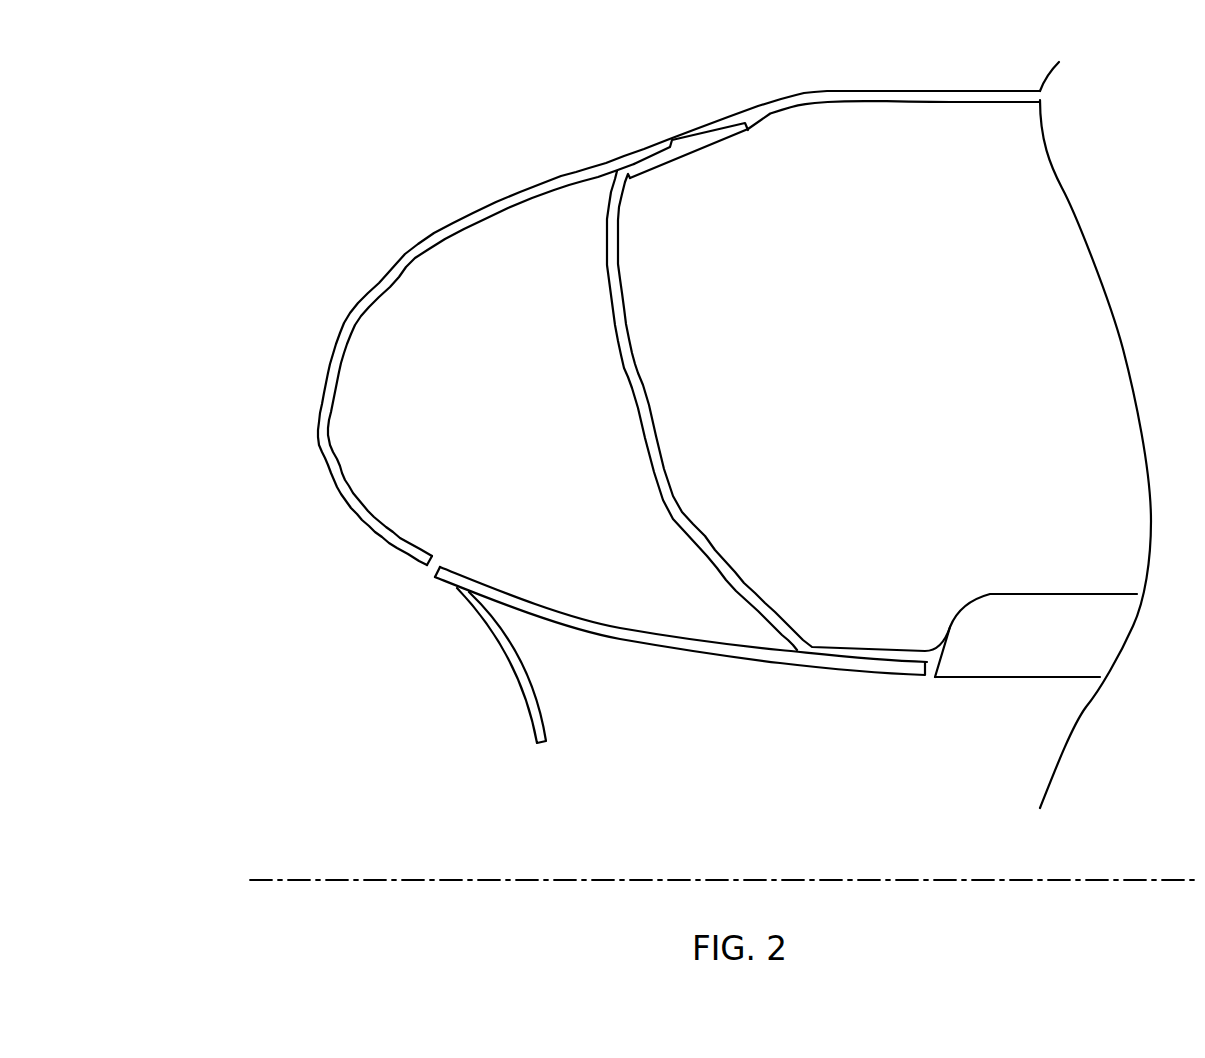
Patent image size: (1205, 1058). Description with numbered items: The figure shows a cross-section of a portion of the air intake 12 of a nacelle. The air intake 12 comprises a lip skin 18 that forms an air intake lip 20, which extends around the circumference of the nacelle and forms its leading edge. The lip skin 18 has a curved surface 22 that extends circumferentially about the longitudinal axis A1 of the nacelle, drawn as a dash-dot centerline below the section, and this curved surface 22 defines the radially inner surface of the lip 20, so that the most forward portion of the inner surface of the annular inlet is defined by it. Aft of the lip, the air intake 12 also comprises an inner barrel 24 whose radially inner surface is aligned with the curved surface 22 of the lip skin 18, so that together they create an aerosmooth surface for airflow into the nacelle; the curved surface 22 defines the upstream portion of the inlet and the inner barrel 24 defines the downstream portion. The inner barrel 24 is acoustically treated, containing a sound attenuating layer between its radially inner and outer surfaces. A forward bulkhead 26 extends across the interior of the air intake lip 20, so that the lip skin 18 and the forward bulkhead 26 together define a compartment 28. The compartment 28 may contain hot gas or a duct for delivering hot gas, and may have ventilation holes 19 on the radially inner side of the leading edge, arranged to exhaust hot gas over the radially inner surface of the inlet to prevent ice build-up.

The air intake 12 is at (253, 132).
The air intake lip 20 is at (285, 445).
The compartment 28 is at (473, 425).
The forward bulkhead 26 is at (613, 280).
The lip skin 18 is at (547, 615).
The ventilation holes 19 is at (431, 573).
The curved surface 22 is at (612, 707).
The inner barrel 24 is at (1087, 646).
The longitudinal axis A1 is at (707, 880).